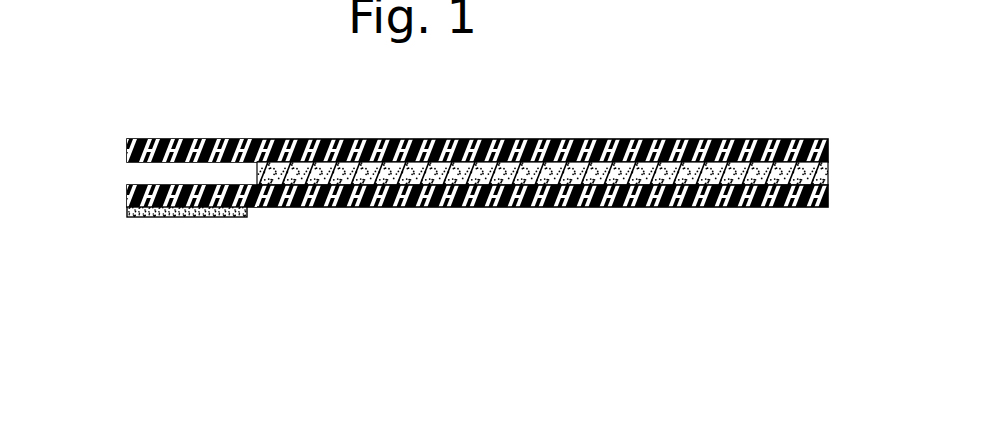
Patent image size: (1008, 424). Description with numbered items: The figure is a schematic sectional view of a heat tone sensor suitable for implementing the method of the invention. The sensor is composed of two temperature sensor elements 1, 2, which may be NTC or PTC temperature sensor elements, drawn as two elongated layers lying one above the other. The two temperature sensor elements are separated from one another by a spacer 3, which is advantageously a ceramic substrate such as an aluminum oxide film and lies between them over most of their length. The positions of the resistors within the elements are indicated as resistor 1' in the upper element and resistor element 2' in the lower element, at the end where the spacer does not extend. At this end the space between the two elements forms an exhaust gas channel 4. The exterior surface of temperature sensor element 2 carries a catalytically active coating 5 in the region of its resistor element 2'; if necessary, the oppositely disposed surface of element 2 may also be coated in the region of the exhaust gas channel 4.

The temperature sensor element 1 is at (477, 120).
The resistor 1' is at (192, 118).
The temperature sensor element 2 is at (477, 230).
The resistor element 2' is at (192, 231).
The spacer 3 is at (818, 176).
The exhaust gas channel 4 is at (136, 171).
The catalytically active coating 5 is at (157, 218).